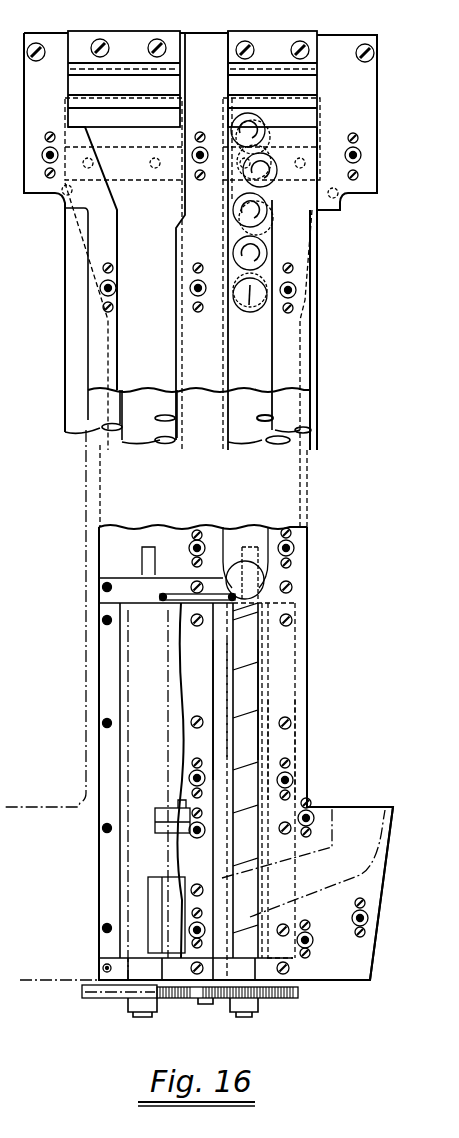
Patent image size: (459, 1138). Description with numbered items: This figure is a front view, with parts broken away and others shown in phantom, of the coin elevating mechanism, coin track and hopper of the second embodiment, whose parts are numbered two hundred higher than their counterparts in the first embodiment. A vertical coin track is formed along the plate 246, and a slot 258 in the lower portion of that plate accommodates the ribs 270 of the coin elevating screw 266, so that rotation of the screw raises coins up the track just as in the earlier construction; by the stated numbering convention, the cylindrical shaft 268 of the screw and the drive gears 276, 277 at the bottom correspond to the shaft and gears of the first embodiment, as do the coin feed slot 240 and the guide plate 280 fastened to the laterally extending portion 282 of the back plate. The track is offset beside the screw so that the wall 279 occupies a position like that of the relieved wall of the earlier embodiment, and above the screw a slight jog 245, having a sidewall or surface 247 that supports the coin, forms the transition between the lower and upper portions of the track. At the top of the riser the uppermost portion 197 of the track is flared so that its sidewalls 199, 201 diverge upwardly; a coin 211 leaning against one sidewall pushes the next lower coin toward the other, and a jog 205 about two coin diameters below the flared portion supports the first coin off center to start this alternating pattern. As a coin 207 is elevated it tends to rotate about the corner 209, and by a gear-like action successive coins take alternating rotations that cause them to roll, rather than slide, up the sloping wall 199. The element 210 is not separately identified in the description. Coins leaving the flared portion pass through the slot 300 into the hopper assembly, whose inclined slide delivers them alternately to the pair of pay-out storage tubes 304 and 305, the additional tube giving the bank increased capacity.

The slot 300 is at (290, 117).
The coin 211 is at (233, 106).
The sidewall 199 is at (288, 139).
The uppermost portion of the coin track 197 is at (308, 147).
The sidewall 201 is at (231, 180).
The roller 210 is at (272, 206).
The corner 209 is at (275, 256).
The jog 205 is at (300, 259).
The coin 207 is at (272, 280).
The pay-out storage tube 305 is at (100, 419).
The pay-out storage tube 304 is at (160, 413).
The jog 245 is at (201, 573).
The sidewall or surface 247 is at (267, 583).
The ribs 270 is at (237, 662).
The helical thread 268 is at (245, 692).
The slot 258 is at (237, 708).
The coin elevating screw 266 is at (258, 708).
The wall 279 is at (217, 740).
The plate 246 is at (293, 750).
The shelf 282 is at (354, 800).
The frame 240 is at (327, 890).
The plate 280 is at (382, 884).
The threaded rod 277 is at (298, 995).
The nut 276 is at (177, 1002).